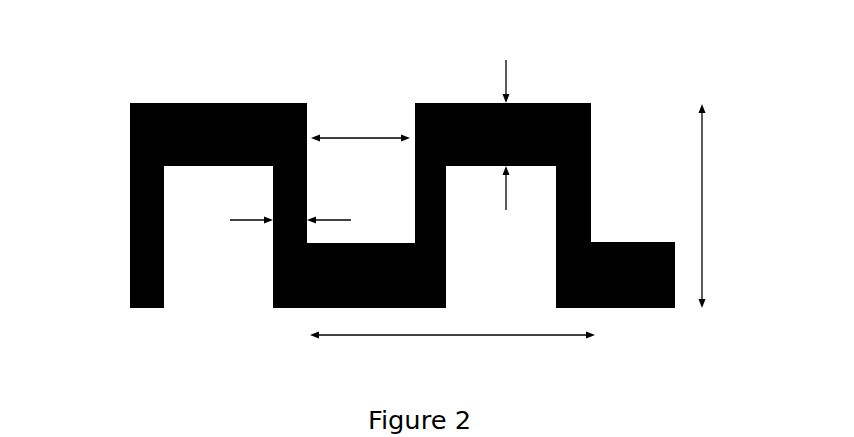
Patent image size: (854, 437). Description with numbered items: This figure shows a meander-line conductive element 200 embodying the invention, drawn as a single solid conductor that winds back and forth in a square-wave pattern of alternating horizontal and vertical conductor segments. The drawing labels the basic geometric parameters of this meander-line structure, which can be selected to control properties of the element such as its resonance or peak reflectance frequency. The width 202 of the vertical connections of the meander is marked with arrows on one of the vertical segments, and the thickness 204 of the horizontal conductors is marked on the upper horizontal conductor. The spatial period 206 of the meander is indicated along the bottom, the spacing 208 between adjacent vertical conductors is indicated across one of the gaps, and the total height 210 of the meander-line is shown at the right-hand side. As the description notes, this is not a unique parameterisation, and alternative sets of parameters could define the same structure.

The meander-line conductive element 200 is at (94, 74).
The width of the vertical connections 202 is at (251, 213).
The thickness of the horizontal conductors 204 is at (498, 68).
The spatial period 206 is at (520, 328).
The spacing between vertical conductors 208 is at (365, 128).
The total height 210 is at (694, 187).